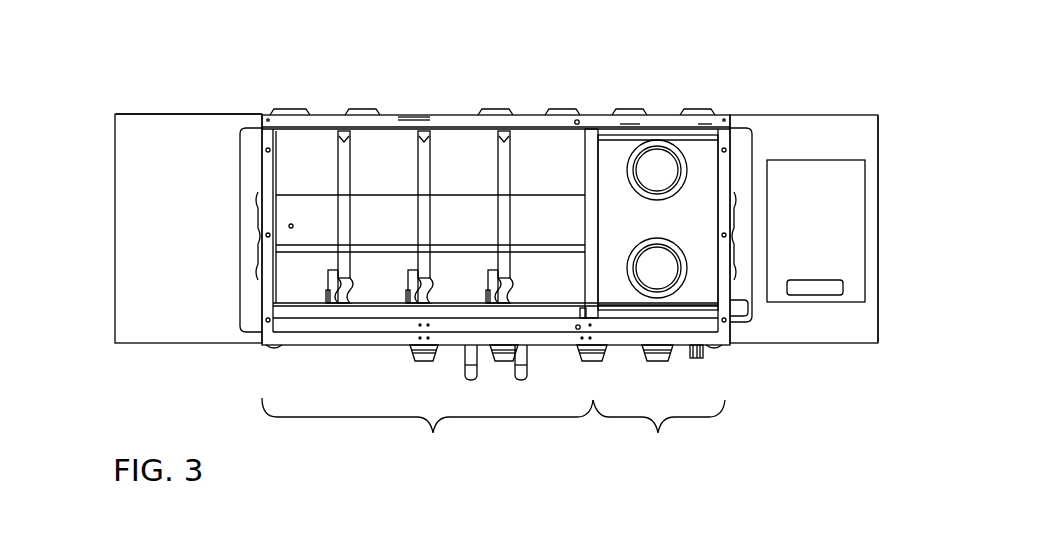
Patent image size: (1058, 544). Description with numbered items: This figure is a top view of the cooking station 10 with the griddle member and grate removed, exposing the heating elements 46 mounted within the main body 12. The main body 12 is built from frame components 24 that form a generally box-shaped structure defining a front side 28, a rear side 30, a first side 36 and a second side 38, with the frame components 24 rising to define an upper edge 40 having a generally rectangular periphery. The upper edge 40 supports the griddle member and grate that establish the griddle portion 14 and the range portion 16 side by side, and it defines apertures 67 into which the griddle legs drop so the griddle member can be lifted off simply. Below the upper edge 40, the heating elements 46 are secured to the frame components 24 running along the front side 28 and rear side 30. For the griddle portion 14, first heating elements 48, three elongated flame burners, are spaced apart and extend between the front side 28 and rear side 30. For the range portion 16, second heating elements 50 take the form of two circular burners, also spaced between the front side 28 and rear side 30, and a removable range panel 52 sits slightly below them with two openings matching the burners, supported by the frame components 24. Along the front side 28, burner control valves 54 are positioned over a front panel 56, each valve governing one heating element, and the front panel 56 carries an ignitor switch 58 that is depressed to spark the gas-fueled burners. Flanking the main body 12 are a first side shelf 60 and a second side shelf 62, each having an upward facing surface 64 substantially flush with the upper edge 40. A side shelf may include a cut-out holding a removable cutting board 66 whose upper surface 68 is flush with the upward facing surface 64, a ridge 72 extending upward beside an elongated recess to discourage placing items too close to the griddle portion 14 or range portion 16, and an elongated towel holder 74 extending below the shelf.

The cooking station 10 is at (815, 40).
The main body 12 is at (330, 112).
The griddle portion 14 is at (427, 431).
The range portion 16 is at (659, 432).
The frame components 24 is at (276, 304).
The front side 28 is at (525, 440).
The rear side 30 is at (443, 100).
The first side 36 is at (97, 226).
The second side 38 is at (890, 221).
The upper edge 40 is at (262, 168).
The heating elements 46 is at (354, 186).
The first heating elements 48 is at (498, 170).
The second heating elements 50 is at (636, 180).
The range panel 52 is at (707, 158).
The burner control valves 54 is at (425, 358).
The front panel 56 is at (545, 347).
The ignitor switch 58 is at (705, 350).
The first side shelf 60 is at (150, 112).
The second side shelf 62 is at (828, 108).
The upward facing surface 64 is at (185, 120).
The cutting board 66 is at (870, 205).
The apertures 67 is at (578, 120).
The upper surface 68 is at (848, 250).
The ridge 72 is at (748, 305).
The towel holder 74 is at (752, 152).